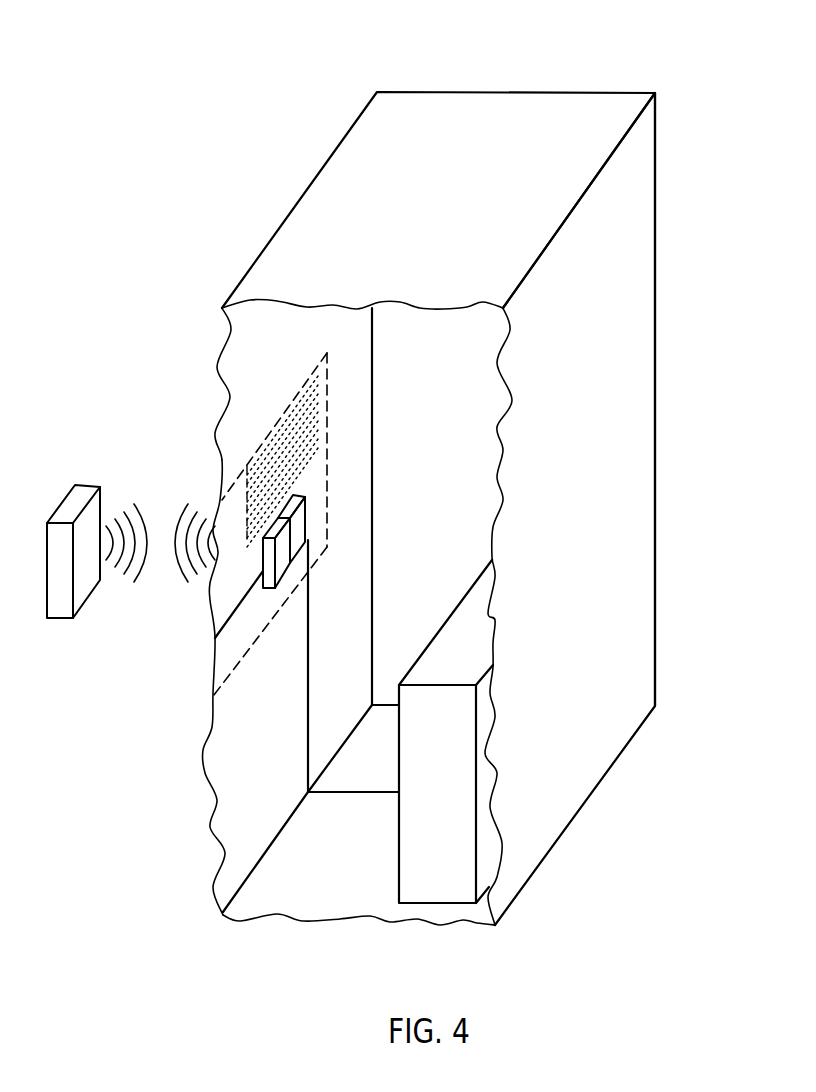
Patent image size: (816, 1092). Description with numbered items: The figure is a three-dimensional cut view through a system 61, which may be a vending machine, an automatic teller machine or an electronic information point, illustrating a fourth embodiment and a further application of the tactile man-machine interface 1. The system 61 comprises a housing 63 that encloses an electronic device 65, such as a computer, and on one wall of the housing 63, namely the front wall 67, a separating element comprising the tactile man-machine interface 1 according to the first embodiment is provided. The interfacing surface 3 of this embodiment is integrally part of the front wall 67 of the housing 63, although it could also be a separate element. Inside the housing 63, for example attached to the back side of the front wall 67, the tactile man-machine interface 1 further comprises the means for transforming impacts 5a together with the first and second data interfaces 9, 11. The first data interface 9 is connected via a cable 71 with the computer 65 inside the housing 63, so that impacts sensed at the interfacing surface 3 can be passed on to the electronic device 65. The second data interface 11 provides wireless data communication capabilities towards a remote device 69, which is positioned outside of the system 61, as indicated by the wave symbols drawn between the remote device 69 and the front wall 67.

The system 61 is at (343, 88).
The housing 63 is at (638, 368).
The electronic device 65 is at (437, 882).
The front wall 67 is at (228, 346).
The remote device 69 is at (60, 618).
The cable 71 is at (308, 755).
The tactile man-machine interface 1 is at (220, 507).
The interfacing surface 3 is at (235, 583).
The means for transforming impacts 5a is at (270, 590).
The first data interface 9 is at (307, 530).
The second data interface 11 is at (307, 498).